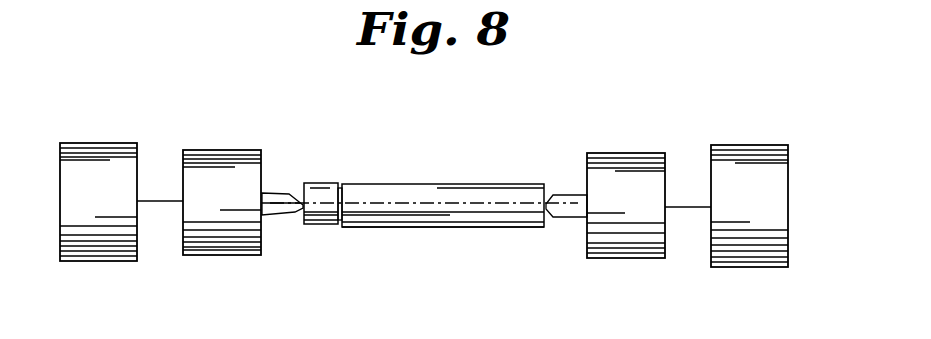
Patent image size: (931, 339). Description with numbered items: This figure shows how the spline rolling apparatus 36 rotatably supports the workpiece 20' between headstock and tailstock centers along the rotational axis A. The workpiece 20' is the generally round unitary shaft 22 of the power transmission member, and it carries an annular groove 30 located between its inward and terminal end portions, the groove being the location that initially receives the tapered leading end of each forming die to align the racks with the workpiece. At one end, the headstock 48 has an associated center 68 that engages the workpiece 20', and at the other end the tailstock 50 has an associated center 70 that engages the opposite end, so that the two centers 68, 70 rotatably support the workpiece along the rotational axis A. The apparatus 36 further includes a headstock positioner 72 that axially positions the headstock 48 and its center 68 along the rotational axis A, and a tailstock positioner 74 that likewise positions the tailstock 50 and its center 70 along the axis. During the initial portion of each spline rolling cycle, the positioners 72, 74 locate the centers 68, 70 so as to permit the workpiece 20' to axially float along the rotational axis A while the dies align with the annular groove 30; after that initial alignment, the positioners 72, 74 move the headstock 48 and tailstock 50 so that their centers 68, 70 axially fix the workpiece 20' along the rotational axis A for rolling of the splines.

The tailstock positioner 74 is at (107, 155).
The tailstock 50 is at (213, 160).
The tailstock center 70 is at (288, 193).
The annular groove 30 is at (341, 185).
The workpiece 20' is at (443, 159).
The rotational axis A is at (453, 200).
The shaft 22 is at (438, 227).
The headstock center 68 is at (563, 195).
The headstock 48 is at (620, 168).
The headstock positioner 72 is at (772, 167).
The apparatus 36 is at (703, 84).